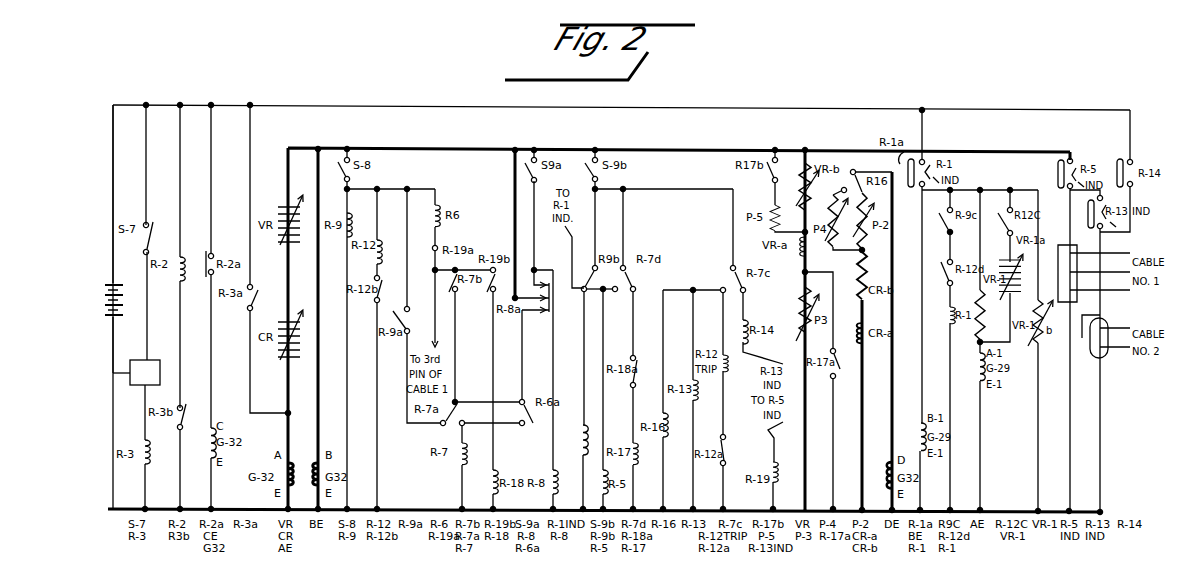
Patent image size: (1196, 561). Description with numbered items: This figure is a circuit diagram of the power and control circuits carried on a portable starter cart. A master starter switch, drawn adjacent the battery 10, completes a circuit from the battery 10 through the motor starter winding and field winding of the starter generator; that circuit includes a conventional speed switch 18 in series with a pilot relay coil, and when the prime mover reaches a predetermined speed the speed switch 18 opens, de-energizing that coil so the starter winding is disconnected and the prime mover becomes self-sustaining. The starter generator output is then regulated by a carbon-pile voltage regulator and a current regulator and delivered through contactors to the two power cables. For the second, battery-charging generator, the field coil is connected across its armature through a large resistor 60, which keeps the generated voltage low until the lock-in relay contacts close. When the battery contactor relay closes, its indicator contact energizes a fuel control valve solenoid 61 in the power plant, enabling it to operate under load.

The battery 10 is at (105, 283).
The speed switch 18 is at (134, 378).
The resistor 60 is at (987, 314).
The fuel control valve solenoid 61 is at (578, 432).